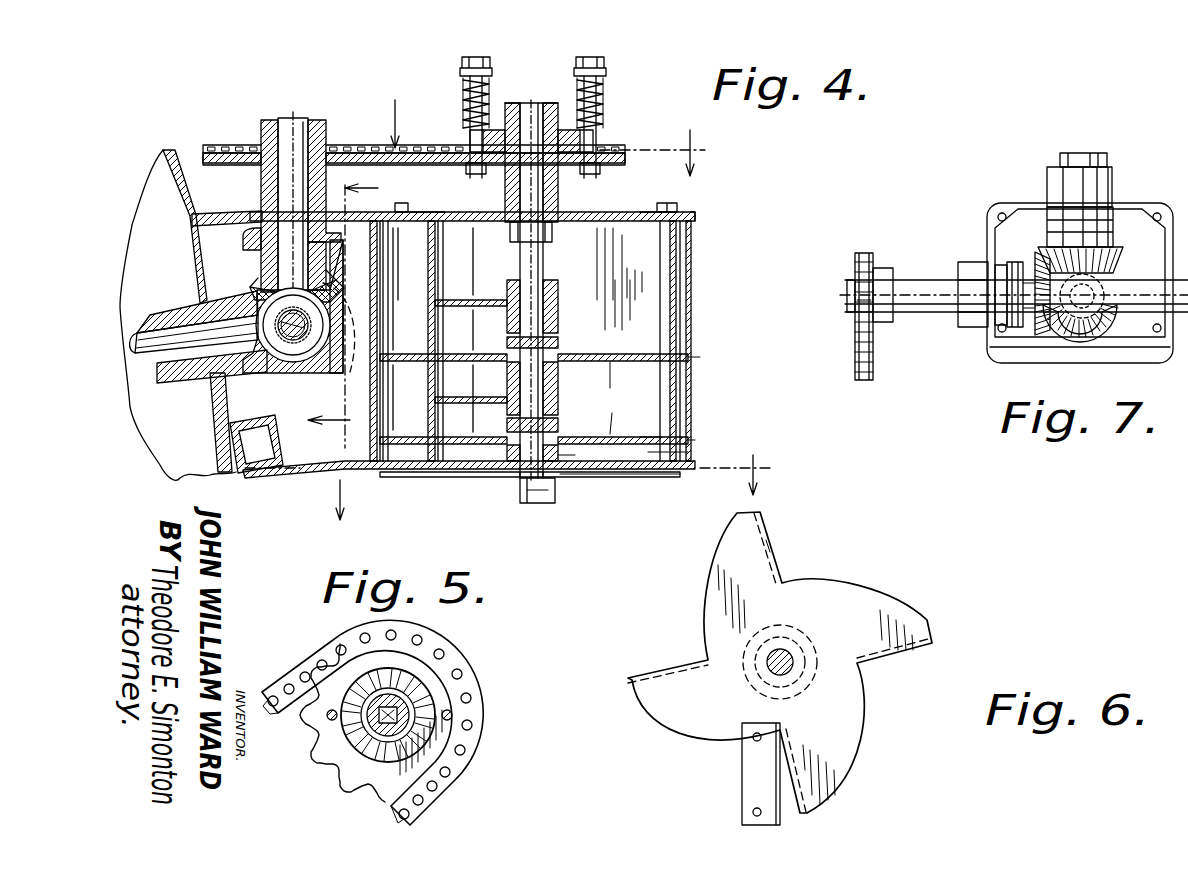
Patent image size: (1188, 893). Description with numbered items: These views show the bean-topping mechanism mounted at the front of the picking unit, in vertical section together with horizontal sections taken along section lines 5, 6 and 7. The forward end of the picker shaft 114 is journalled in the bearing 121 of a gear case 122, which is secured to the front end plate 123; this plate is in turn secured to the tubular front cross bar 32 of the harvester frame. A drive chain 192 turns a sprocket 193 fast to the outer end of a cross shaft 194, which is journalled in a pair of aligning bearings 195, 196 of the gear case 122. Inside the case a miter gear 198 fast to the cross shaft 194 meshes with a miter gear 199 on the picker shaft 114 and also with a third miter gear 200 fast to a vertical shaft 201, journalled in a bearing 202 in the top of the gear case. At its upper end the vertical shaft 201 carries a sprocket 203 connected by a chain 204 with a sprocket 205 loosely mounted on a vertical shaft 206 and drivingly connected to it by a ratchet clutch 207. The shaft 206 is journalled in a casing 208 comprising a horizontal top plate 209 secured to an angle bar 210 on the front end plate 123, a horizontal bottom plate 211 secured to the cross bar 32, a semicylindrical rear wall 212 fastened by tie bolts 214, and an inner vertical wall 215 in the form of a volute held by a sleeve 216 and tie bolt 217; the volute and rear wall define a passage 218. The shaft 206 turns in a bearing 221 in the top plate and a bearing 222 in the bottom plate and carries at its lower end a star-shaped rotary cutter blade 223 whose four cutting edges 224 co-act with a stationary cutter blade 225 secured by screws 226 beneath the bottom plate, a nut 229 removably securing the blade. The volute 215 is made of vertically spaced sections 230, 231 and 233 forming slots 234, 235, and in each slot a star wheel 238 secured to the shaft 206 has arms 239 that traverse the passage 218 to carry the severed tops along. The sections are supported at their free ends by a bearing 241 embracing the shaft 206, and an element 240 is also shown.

In FIG. 4, the section line 5— 5 is at (553, 125).
In FIG. 4, the section line 6— 6 is at (517, 496).
In FIG. 4, the section line 7— 7 is at (351, 312).
In FIG. 4, the tubular front cross bar 32 is at (283, 456).
In FIG. 4, the picker shaft 114 is at (150, 325).
In FIG. 7, the picker shaft 114 is at (1063, 315).
In FIG. 4, the bearing 121 is at (158, 374).
In FIG. 4, the gear case 122 is at (343, 385).
In FIG. 7, the gear case 122 is at (1133, 207).
In FIG. 4, the front end plate 123 is at (164, 157).
In FIG. 7, the drive chain 192 is at (855, 368).
In FIG. 7, the sprocket 193 is at (863, 253).
In FIG. 4, the cross shaft 194 is at (296, 338).
In FIG. 7, the cross shaft 194 is at (926, 312).
In FIG. 7, the aligning bearing 195 is at (967, 262).
In FIG. 4, the aligning bearing 196 is at (294, 343).
In FIG. 4, the miter gear 198 is at (345, 370).
In FIG. 7, the miter gear 198 is at (1032, 262).
In FIG. 4, the miter gear 199 is at (272, 360).
In FIG. 7, the miter gear 199 is at (1104, 337).
In FIG. 4, the third miter gear 200 is at (243, 288).
In FIG. 7, the third miter gear 200 is at (1122, 258).
In FIG. 4, the vertical shaft 201 is at (298, 118).
In FIG. 7, the vertical shaft 201 is at (1082, 155).
In FIG. 4, the bearing 202 is at (262, 200).
In FIG. 7, the bearing 202 is at (1100, 160).
In FIG. 4, the sprocket 203 is at (257, 153).
In FIG. 5, the chain 204 is at (483, 698).
In FIG. 4, the sprocket 205 is at (606, 152).
In FIG. 5, the sprocket 205 is at (336, 782).
In FIG. 4, the vertical shaft 206 is at (528, 107).
In FIG. 5, the vertical shaft 206 is at (368, 727).
In FIG. 6, the vertical shaft 206 is at (770, 667).
In FIG. 4, the ratchet clutch 207 is at (604, 76).
In FIG. 5, the ratchet clutch 207 is at (443, 681).
In FIG. 4, the casing 208 is at (703, 202).
In FIG. 4, the horizontal top plate 209 is at (445, 211).
In FIG. 4, the angle bar 210 is at (194, 213).
In FIG. 4, the horizontal bottom plate 211 is at (695, 465).
In FIG. 4, the semicylindrical rear wall 212 is at (382, 289).
In FIG. 4, the tie bolt 214 is at (410, 207).
In FIG. 4, the inner vertical wall 215 is at (632, 272).
In FIG. 4, the sleeve 216 is at (671, 277).
In FIG. 4, the tie bolt 217 is at (667, 203).
In FIG. 4, the passage 218 is at (376, 275).
In FIG. 4, the bearing 221 is at (558, 193).
In FIG. 4, the bearing 222 is at (560, 455).
In FIG. 4, the rotary cutter blade 223 is at (615, 478).
In FIG. 6, the rotary cutter blade 223 is at (780, 662).
In FIG. 4, the cutting edge 224 is at (669, 478).
In FIG. 6, the cutting edge 224 is at (775, 546).
In FIG. 4, the stationary cutter blade 225 is at (518, 478).
In FIG. 6, the stationary cutter blade 225 is at (750, 727).
In FIG. 6, the screw 226 is at (757, 810).
In FIG. 4, the nut 229 is at (548, 490).
In FIG. 4, the section 230 is at (592, 280).
In FIG. 4, the section 231 is at (613, 363).
In FIG. 4, the section 233 is at (684, 453).
In FIG. 4, the slot 234 is at (627, 354).
In FIG. 4, the slot 235 is at (647, 437).
In FIG. 4, the star wheel 238 is at (615, 411).
In FIG. 4, the arm 239 is at (690, 357).
In FIG. 4, the shelf 240 is at (486, 300).
In FIG. 4, the bearing 241 is at (558, 294).